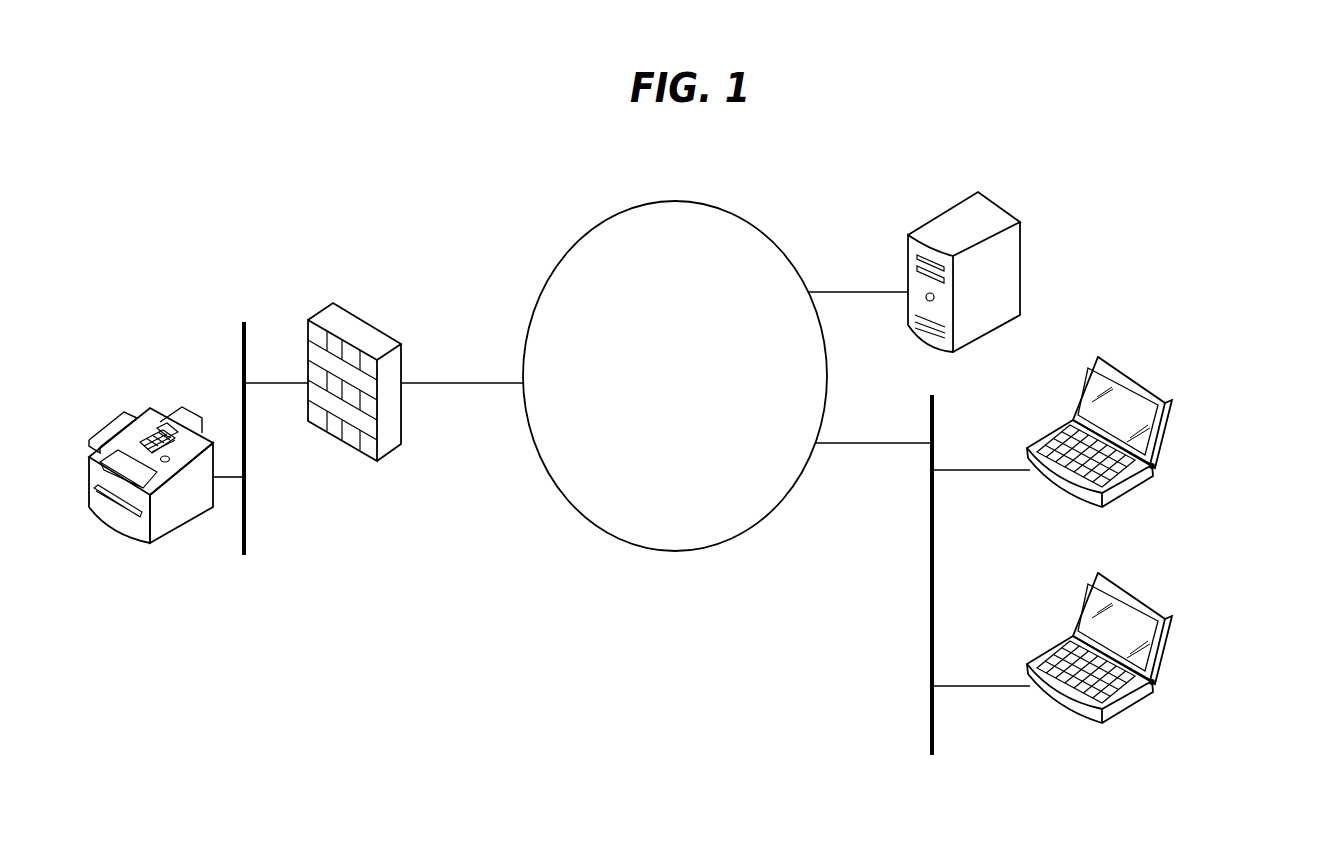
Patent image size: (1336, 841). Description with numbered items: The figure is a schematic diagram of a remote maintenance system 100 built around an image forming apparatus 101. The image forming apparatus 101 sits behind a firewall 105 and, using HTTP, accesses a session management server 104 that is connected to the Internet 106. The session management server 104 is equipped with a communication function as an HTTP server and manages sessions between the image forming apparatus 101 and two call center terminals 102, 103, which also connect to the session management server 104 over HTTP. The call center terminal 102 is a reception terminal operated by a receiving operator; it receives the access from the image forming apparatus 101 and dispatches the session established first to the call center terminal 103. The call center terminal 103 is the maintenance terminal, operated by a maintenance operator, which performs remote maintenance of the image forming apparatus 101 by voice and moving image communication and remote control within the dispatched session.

The remote maintenance system 100 is at (160, 168).
The image forming apparatus 101 is at (152, 412).
The call center terminal 102 is at (1173, 400).
The call center terminal 103 is at (1173, 616).
The session management server 104 is at (978, 194).
The firewall 105 is at (332, 304).
The Internet 106 is at (680, 553).